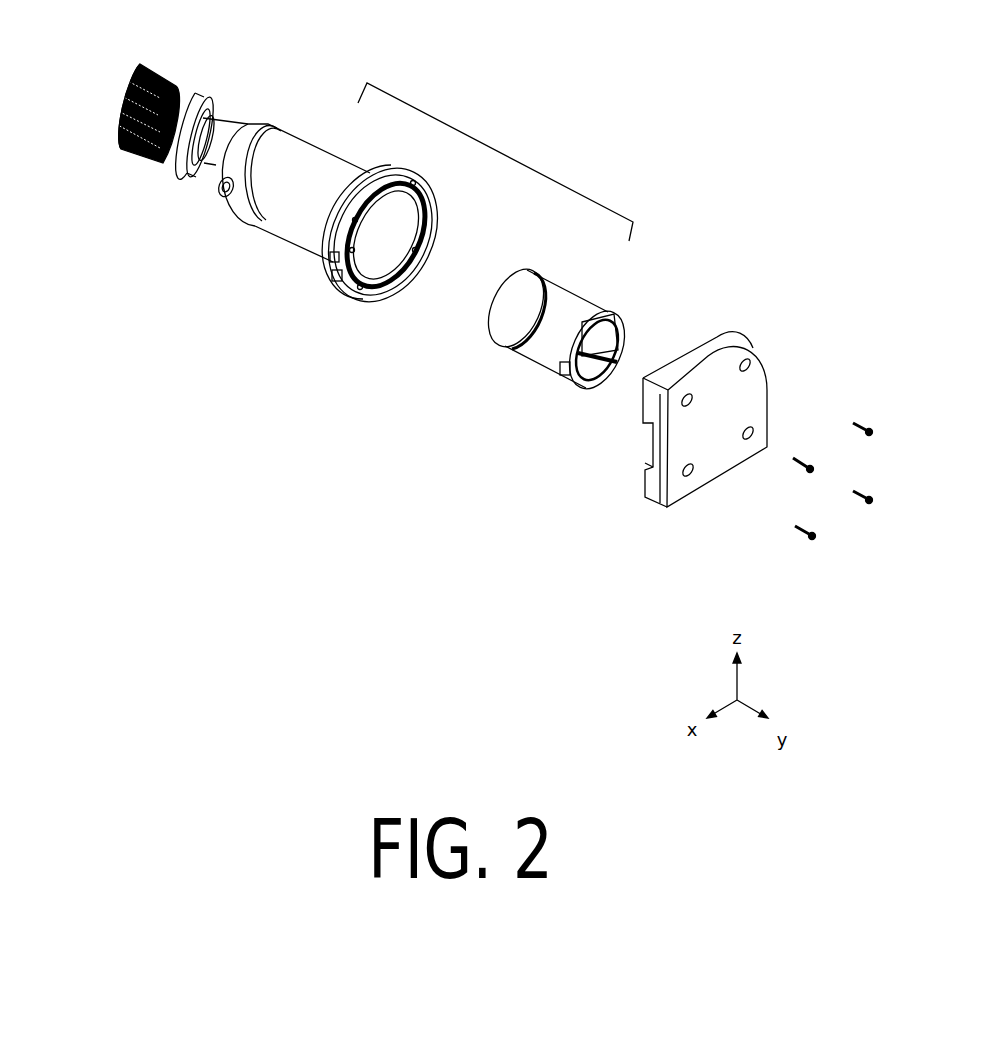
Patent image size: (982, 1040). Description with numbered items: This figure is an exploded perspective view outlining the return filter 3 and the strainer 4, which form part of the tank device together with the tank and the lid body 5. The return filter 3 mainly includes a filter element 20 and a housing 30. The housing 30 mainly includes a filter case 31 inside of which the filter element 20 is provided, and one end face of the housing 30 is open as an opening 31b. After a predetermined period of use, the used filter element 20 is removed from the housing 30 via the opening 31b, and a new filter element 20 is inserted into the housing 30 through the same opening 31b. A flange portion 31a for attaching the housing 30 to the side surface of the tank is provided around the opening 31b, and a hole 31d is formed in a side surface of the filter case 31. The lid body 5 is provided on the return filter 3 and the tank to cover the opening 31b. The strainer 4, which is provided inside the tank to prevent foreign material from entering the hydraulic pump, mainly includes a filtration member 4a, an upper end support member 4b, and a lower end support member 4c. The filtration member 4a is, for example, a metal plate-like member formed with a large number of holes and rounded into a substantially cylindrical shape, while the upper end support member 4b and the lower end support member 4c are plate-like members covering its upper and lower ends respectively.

The return filter 3 is at (503, 152).
The strainer 4 is at (166, 112).
The filtration member 4a is at (132, 150).
The upper end support member 4b is at (207, 97).
The lower end support member 4c is at (107, 96).
The filter element 20 is at (557, 302).
The housing 30 is at (333, 171).
The filter case 31 is at (322, 239).
The flange portion 31a is at (428, 193).
The opening 31b is at (388, 283).
The hole 31d is at (226, 197).
The lid body 5 is at (747, 390).